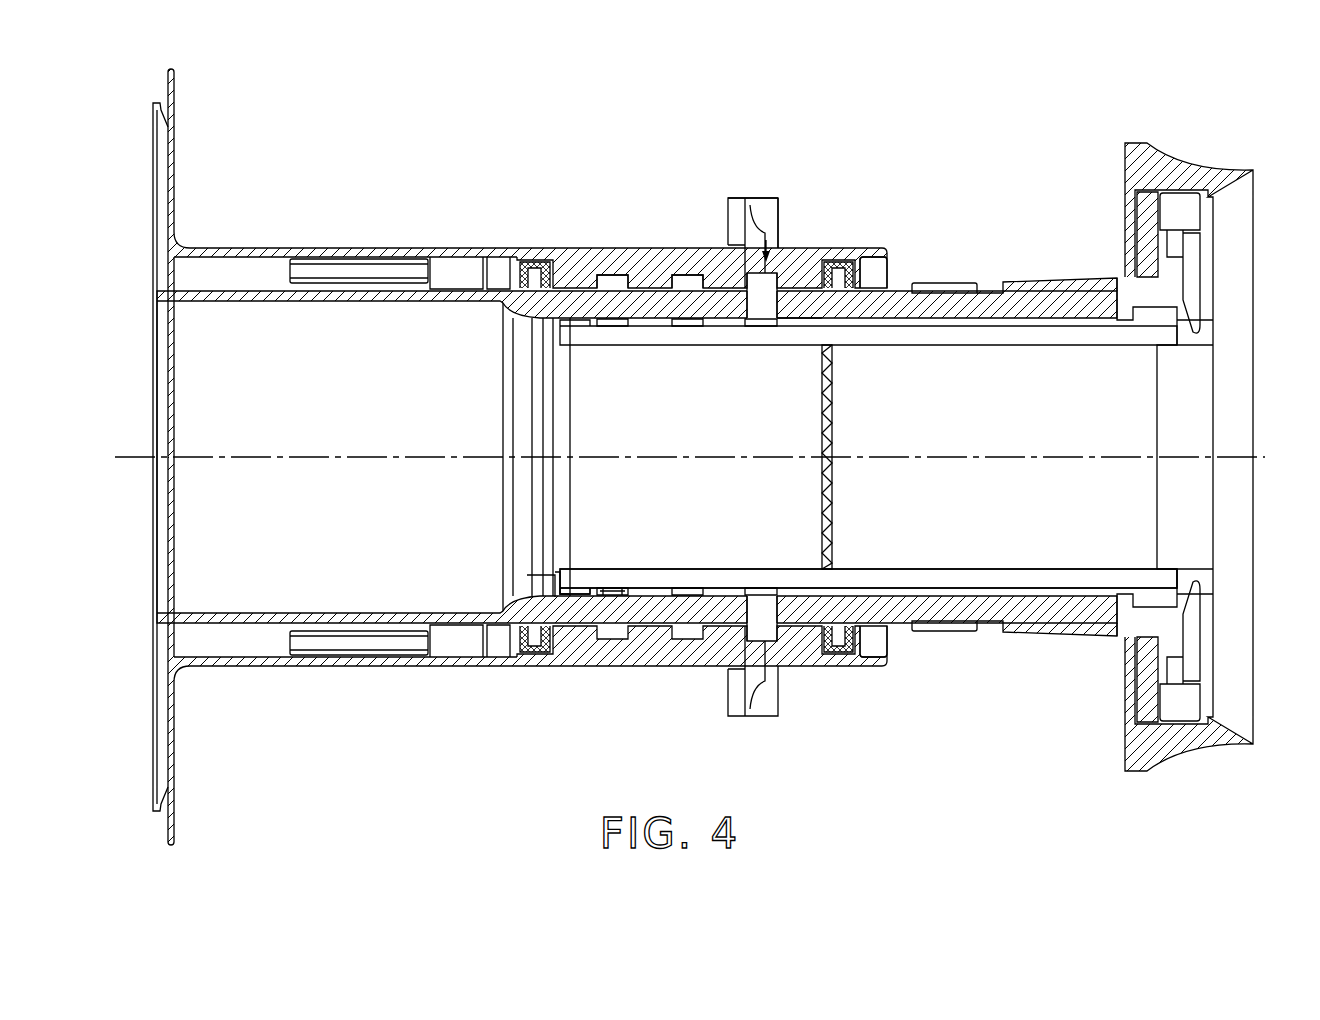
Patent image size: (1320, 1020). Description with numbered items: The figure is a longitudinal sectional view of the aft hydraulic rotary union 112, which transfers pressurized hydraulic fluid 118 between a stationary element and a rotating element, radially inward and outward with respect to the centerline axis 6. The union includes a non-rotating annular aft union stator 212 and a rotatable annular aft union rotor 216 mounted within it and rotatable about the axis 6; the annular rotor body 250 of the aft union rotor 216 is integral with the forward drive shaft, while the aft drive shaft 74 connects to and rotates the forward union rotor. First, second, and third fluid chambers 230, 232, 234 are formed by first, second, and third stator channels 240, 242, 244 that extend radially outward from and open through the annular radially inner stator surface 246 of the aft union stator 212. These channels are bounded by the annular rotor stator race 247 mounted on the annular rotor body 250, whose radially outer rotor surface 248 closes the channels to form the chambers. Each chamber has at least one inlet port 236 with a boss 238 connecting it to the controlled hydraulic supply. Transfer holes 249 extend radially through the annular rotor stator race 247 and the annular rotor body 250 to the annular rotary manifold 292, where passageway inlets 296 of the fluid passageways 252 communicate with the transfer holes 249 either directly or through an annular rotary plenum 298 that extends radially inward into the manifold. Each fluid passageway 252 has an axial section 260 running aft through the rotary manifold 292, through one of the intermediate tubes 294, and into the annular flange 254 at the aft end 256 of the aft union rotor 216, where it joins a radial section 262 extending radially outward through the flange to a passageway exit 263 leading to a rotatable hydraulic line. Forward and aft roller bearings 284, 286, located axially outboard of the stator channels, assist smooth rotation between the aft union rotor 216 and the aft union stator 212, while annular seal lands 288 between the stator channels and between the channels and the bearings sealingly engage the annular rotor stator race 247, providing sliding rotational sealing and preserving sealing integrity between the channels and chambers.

The centerline axis 6 is at (1030, 452).
The aft drive shaft 74 is at (240, 292).
The aft hydraulic rotary union 112 is at (599, 677).
The pressurized hydraulic fluid 118 is at (728, 220).
The aft union stator 212 is at (532, 247).
The aft union rotor 216 is at (936, 345).
The first fluid chamber 230 is at (612, 276).
The second fluid chamber 232 is at (688, 276).
The third fluid chamber 234 is at (768, 282).
The inlet port 236 is at (767, 198).
The boss 238 is at (783, 222).
The first stator channel 240 is at (605, 324).
The second stator channel 242 is at (675, 327).
The third stator channel 244 is at (758, 327).
The radially inner stator surface 246 is at (805, 292).
The annular rotor stator race 247 is at (783, 627).
The radially outer rotor surface 248 is at (781, 650).
The transfer holes 249 is at (781, 678).
The annular rotor body 250 is at (455, 302).
The fluid passageways 252 is at (758, 570).
The annular flange 254 is at (1170, 162).
The aft end 256 is at (1177, 590).
The axial section 260 is at (930, 284).
The radial section 262 is at (1197, 273).
The passageway exit 263 is at (1150, 237).
The forward roller bearing 284 is at (520, 262).
The aft roller bearing 286 is at (872, 262).
The annular seal lands 288 is at (838, 270).
The annular rotary manifold 292 is at (610, 586).
The intermediate tubes 294 is at (985, 345).
The passageway inlets 296 is at (575, 562).
The annular rotary plenum 298 is at (618, 590).